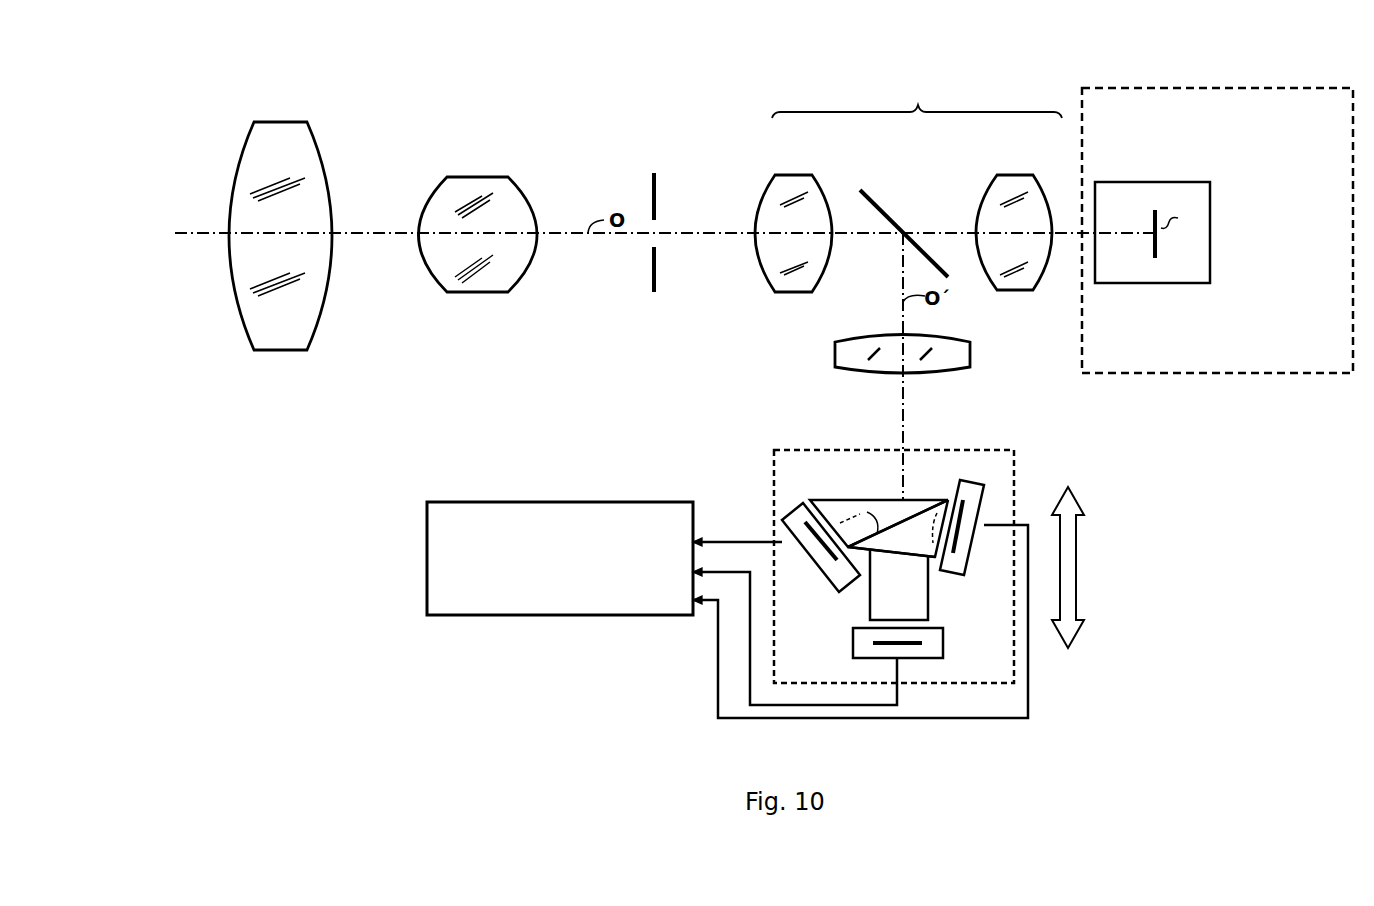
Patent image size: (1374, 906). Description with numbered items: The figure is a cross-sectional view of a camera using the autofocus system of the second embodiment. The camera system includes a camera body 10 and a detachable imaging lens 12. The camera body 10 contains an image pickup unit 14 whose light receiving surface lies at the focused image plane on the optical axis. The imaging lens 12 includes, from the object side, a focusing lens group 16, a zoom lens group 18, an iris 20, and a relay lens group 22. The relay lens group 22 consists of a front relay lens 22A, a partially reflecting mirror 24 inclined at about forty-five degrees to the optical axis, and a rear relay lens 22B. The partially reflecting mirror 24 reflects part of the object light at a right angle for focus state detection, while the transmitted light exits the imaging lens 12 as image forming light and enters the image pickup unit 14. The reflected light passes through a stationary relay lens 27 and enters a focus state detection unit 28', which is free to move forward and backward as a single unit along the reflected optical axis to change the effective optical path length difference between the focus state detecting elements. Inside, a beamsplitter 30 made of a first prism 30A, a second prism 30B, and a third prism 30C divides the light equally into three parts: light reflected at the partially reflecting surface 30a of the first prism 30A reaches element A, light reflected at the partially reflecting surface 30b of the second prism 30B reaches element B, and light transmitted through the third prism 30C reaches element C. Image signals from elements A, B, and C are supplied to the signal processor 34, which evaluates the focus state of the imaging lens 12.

The camera body 10 is at (1270, 90).
The imaging lens 12 is at (793, 82).
The image pickup unit 14 is at (1154, 189).
The focusing lens group 16 is at (287, 118).
The zoom lens group 18 is at (482, 168).
The iris 20 is at (656, 170).
The relay lens group 22 is at (908, 185).
The front relay lens 22A is at (796, 173).
The rear relay lens 22B is at (1018, 173).
The partially reflecting mirror 24 is at (887, 209).
The relay lens 27 is at (970, 352).
The focus state detection unit 28' is at (1080, 527).
The beamsplitter 30 is at (946, 495).
The first prism 30A is at (843, 507).
The partially reflecting surface 30a is at (853, 505).
The second prism 30B is at (920, 500).
The partially reflecting surface 30b is at (917, 547).
The third prism 30C is at (877, 585).
The signal processor 34 is at (450, 501).